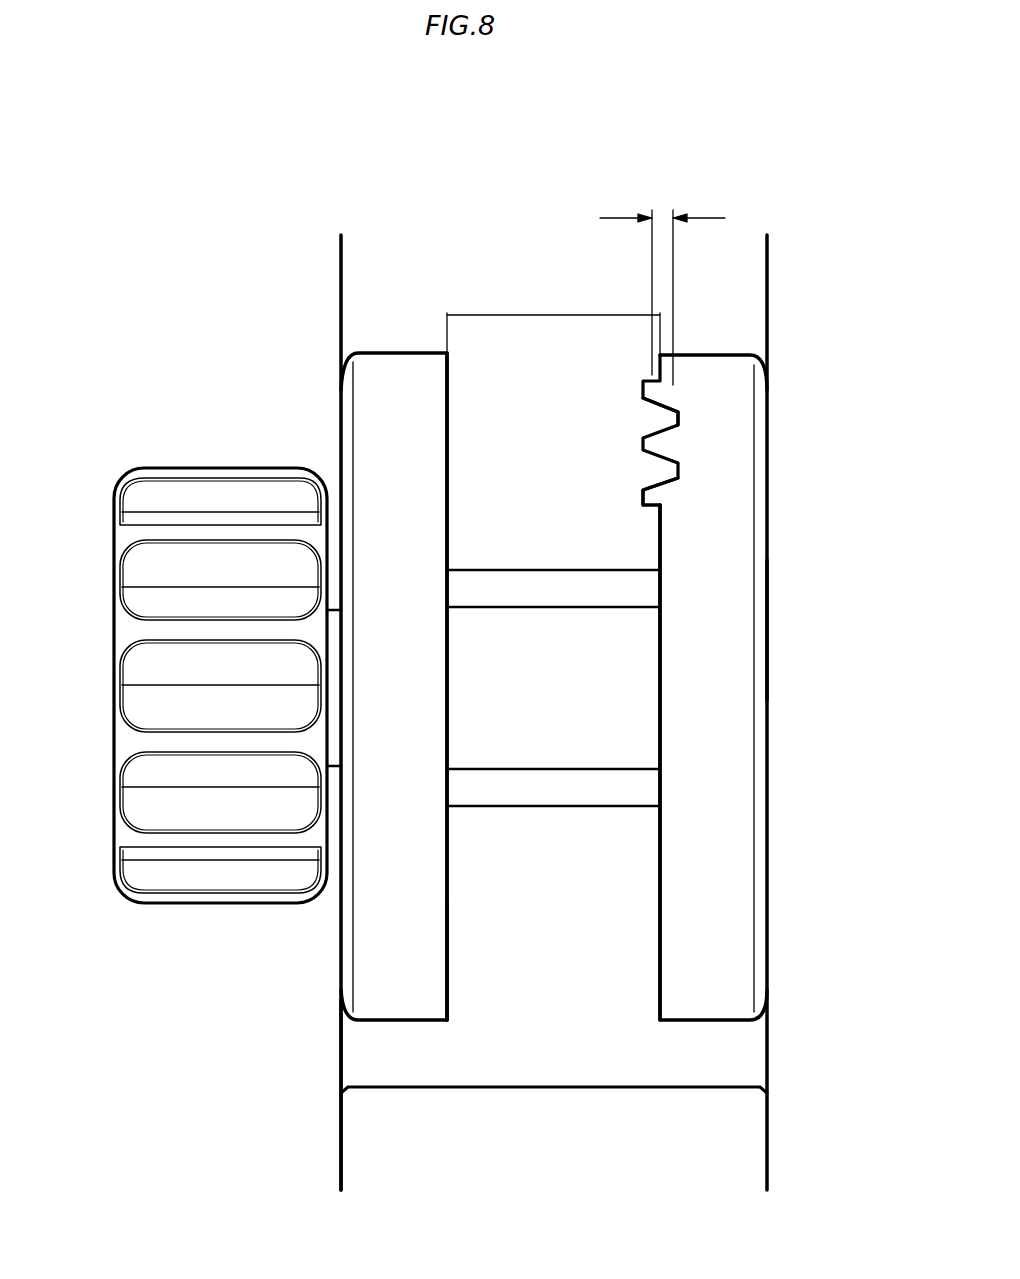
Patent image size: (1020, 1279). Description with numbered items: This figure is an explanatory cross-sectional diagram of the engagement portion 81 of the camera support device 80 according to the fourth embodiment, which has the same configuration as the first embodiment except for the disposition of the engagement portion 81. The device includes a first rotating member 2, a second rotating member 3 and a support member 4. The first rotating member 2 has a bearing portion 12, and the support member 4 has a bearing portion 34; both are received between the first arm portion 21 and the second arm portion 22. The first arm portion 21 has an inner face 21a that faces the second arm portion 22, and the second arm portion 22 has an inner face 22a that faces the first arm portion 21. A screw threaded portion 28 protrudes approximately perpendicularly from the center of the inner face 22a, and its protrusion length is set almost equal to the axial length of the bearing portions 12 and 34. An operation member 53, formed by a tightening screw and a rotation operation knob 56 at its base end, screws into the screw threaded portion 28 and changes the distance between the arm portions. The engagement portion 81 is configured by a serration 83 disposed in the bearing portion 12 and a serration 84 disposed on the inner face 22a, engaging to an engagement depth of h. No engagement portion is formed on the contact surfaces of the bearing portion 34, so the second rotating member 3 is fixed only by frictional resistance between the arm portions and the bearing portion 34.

The camera support device 80 is at (790, 180).
The first rotating member 2 is at (585, 295).
The bearing portion 12 is at (517, 346).
The engagement depth h is at (662, 283).
The operation member 53 is at (145, 432).
The rotation operation knob 56 is at (137, 660).
The first arm portion 21 is at (385, 420).
The inner face 21a is at (447, 730).
The bearing portion 34 is at (472, 965).
The serration 83 is at (680, 416).
The engagement portion 81 is at (693, 435).
The serration 84 is at (656, 503).
The second rotating member 3 is at (802, 610).
The screw threaded portion 28 is at (592, 687).
The second arm portion 22 is at (728, 762).
The inner face 22a is at (660, 853).
The support member 4 is at (317, 1142).